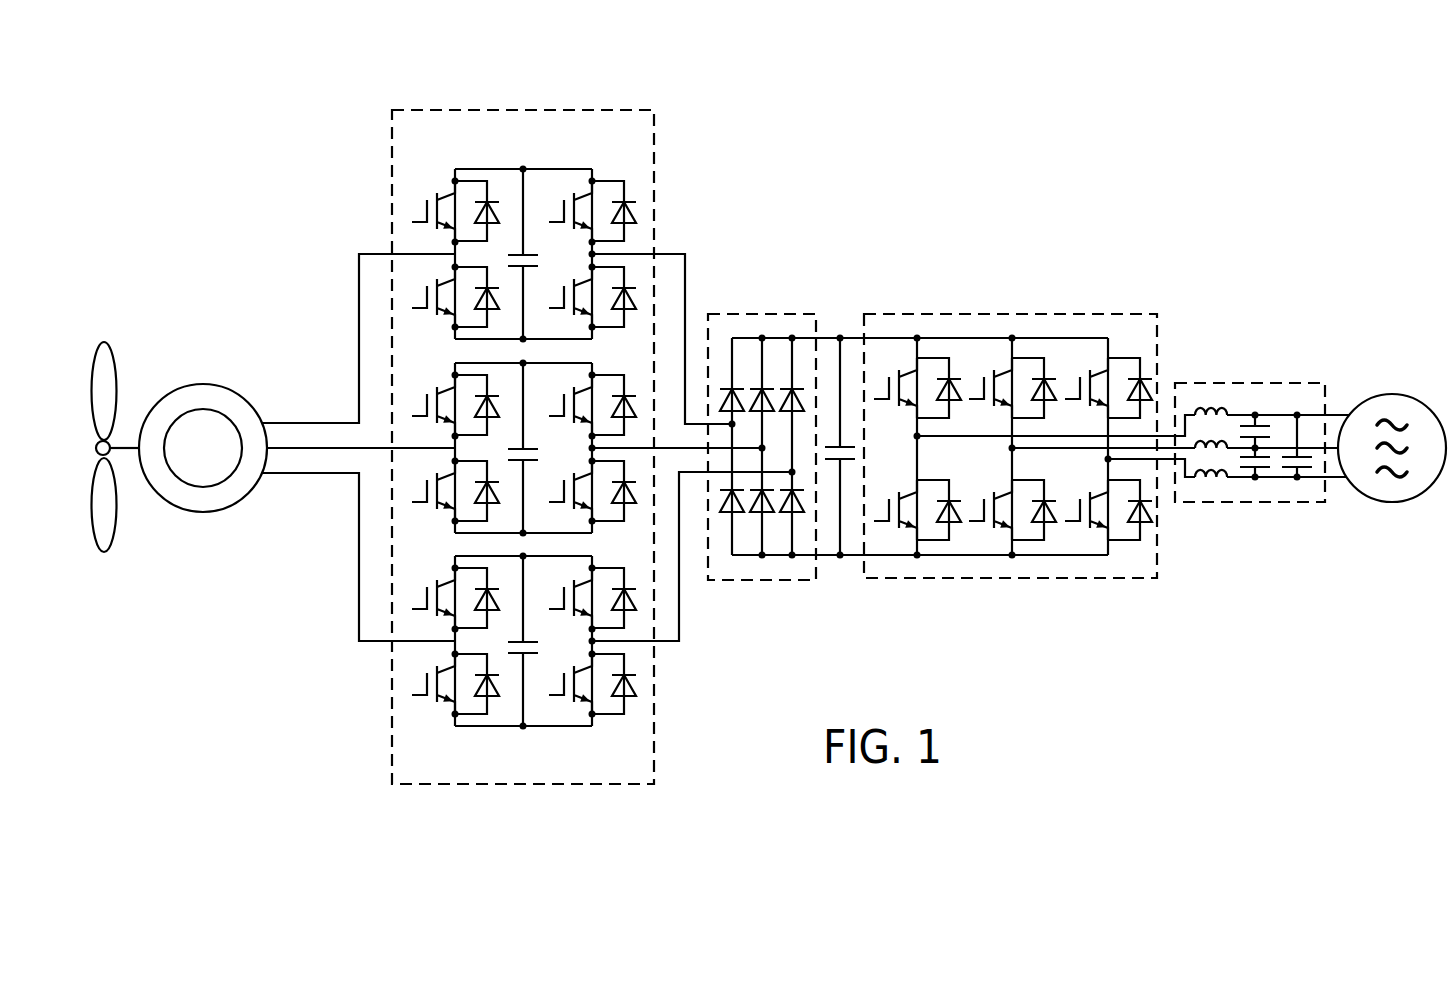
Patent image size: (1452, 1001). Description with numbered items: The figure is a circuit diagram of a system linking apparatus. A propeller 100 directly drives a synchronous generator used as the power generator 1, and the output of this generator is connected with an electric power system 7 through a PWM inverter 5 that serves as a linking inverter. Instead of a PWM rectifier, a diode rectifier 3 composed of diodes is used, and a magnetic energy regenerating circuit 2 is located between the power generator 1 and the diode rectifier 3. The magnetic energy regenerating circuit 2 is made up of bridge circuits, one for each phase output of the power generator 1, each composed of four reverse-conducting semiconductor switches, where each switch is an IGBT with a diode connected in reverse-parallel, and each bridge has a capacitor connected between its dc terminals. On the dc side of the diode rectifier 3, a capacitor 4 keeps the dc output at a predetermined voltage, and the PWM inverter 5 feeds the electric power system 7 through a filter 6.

The propeller 100 is at (115, 365).
The power generator 1 is at (243, 393).
The magnetic energy regenerating circuit 2 is at (634, 110).
The diode rectifier 3 is at (767, 314).
The capacitor 4 is at (856, 447).
The PWM inverter 5 is at (1017, 314).
The filter 6 is at (1253, 383).
The electric power system 7 is at (1387, 394).